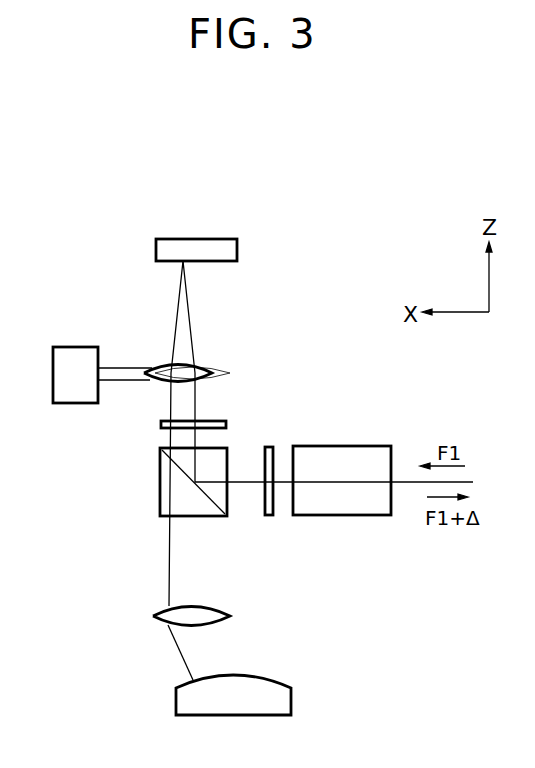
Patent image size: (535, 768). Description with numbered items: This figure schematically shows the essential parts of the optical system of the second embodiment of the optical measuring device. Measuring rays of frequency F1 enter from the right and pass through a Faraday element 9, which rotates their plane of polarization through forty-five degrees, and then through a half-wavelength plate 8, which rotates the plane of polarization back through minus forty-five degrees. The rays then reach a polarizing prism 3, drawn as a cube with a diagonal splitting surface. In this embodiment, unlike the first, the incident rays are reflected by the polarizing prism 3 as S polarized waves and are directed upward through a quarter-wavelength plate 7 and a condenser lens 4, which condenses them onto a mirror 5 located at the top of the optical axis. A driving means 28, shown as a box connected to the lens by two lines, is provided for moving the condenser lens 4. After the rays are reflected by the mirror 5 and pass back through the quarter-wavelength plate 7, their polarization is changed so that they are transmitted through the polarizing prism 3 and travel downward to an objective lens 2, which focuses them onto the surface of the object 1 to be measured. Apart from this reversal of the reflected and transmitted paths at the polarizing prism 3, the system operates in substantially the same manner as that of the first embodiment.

The object 1 is at (291, 697).
The objective lens 2 is at (230, 612).
The polarizing prism 3 is at (160, 497).
The condenser lens 4 is at (207, 366).
The mirror 5 is at (237, 248).
The quarter-wavelength plate 7 is at (226, 424).
The half-wavelength plate 8 is at (270, 515).
The Faraday element 9 is at (348, 515).
The driving means 28 is at (87, 347).